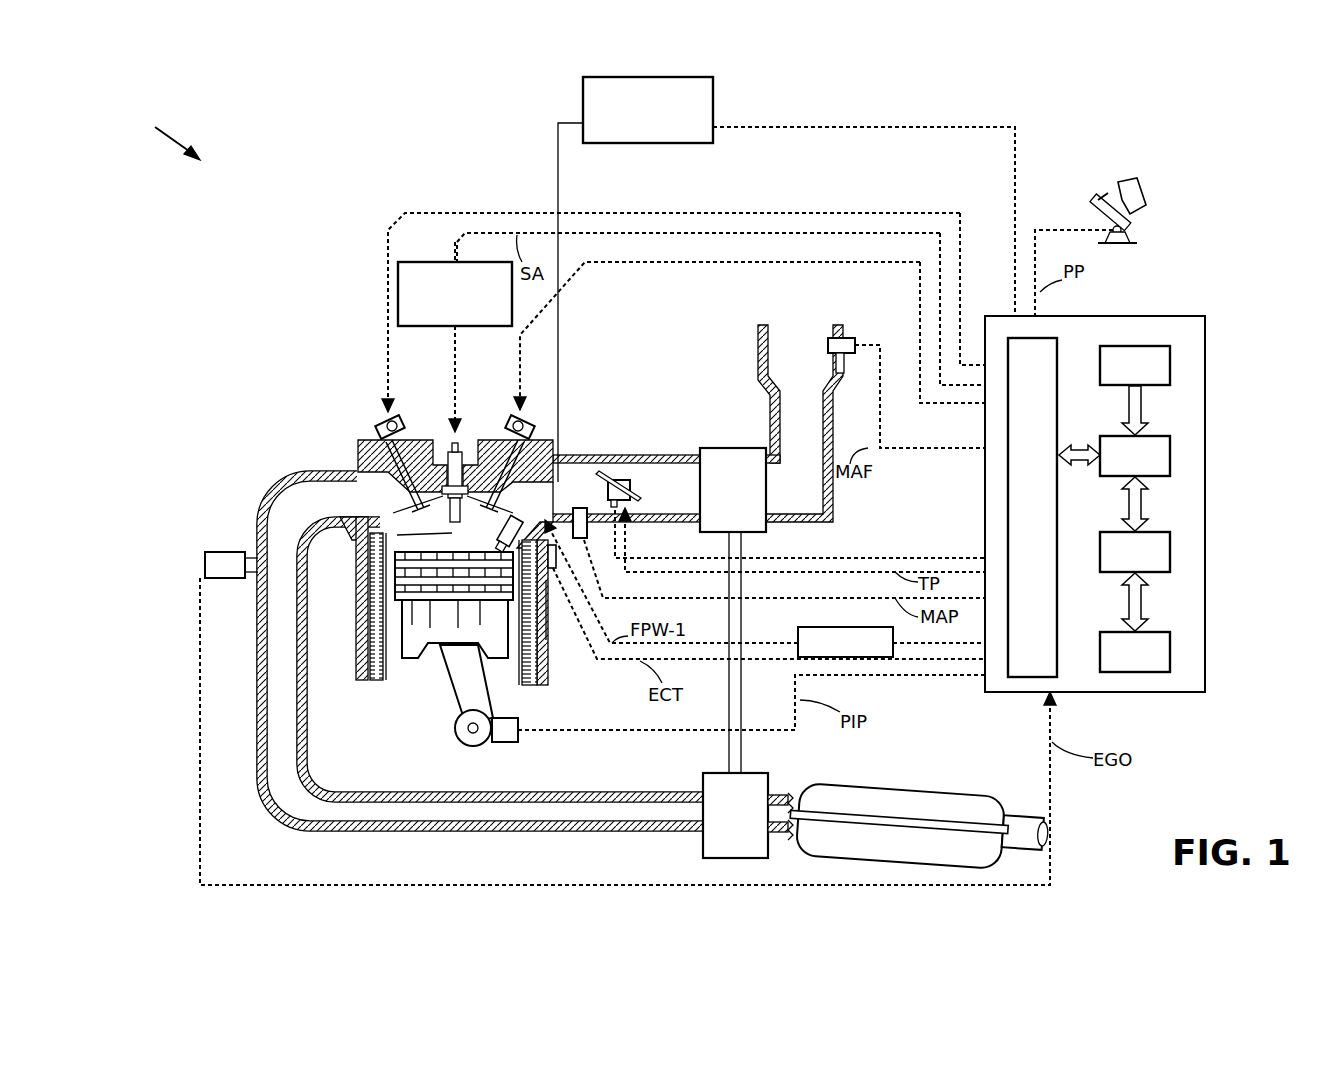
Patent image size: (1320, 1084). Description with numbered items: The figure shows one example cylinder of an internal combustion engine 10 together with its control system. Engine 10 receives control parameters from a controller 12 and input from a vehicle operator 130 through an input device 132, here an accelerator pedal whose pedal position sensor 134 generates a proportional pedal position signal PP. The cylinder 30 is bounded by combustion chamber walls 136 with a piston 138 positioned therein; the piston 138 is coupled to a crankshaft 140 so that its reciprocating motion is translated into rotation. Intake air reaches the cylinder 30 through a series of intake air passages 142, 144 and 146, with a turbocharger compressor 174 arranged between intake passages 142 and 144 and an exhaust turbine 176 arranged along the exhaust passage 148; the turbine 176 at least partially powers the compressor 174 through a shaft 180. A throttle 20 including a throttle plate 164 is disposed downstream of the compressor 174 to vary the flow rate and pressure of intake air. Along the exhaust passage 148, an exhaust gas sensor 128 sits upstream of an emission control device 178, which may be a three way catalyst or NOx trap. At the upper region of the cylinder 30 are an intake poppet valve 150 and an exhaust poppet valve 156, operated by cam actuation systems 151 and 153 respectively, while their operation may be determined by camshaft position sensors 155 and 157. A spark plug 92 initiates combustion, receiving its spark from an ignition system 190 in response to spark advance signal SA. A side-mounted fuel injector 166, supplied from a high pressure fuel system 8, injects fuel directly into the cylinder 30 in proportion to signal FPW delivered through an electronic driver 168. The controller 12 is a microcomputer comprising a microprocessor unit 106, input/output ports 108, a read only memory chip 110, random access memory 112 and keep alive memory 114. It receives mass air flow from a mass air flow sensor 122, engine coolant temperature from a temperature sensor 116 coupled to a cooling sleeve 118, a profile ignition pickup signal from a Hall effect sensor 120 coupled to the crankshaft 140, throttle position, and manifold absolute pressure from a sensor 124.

The internal combustion engine 10 is at (161, 138).
The high pressure fuel system 8 is at (713, 92).
The ignition system 190 is at (432, 246).
The camshaft position sensor 157 is at (382, 425).
The cam actuation system 153 is at (397, 412).
The spark plug 92 is at (450, 445).
The intake poppet valve 150 is at (470, 460).
The cam actuation system 151 is at (505, 410).
The camshaft position sensor 155 is at (545, 430).
The exhaust poppet valve 156 is at (385, 465).
The throttle plate 164 is at (597, 474).
The throttle 20 is at (622, 478).
The exhaust passage 148 is at (343, 508).
The intake air passage 146 is at (593, 499).
The intake air passage 144 is at (688, 499).
The fuel injector 166 is at (645, 569).
The compressor 174 is at (720, 448).
The intake air passage 142 is at (818, 369).
The mass air flow sensor 122 is at (848, 338).
The cylinder 30 is at (356, 563).
The exhaust gas sensor 128 is at (205, 556).
The manifold absolute pressure sensor 124 is at (583, 538).
The combustion chamber walls 136 is at (403, 667).
The piston 138 is at (437, 630).
The cooling sleeve 118 is at (548, 595).
The temperature sensor 116 is at (553, 612).
The electronic driver 168 is at (798, 628).
The crankshaft 140 is at (465, 746).
The Hall effect sensor 120 is at (505, 744).
The shaft 180 is at (742, 740).
The exhaust turbine 176 is at (703, 840).
The emission control device 178 is at (965, 790).
The input device 132 is at (1100, 203).
The vehicle operator 130 is at (1145, 196).
The pedal position sensor 134 is at (1125, 232).
The controller 12 is at (1205, 316).
The input/output ports 108 is at (1057, 345).
The read only memory chip 110 is at (1170, 358).
The microprocessor unit 106 is at (1170, 450).
The random access memory 112 is at (1170, 548).
The keep alive memory 114 is at (1170, 648).